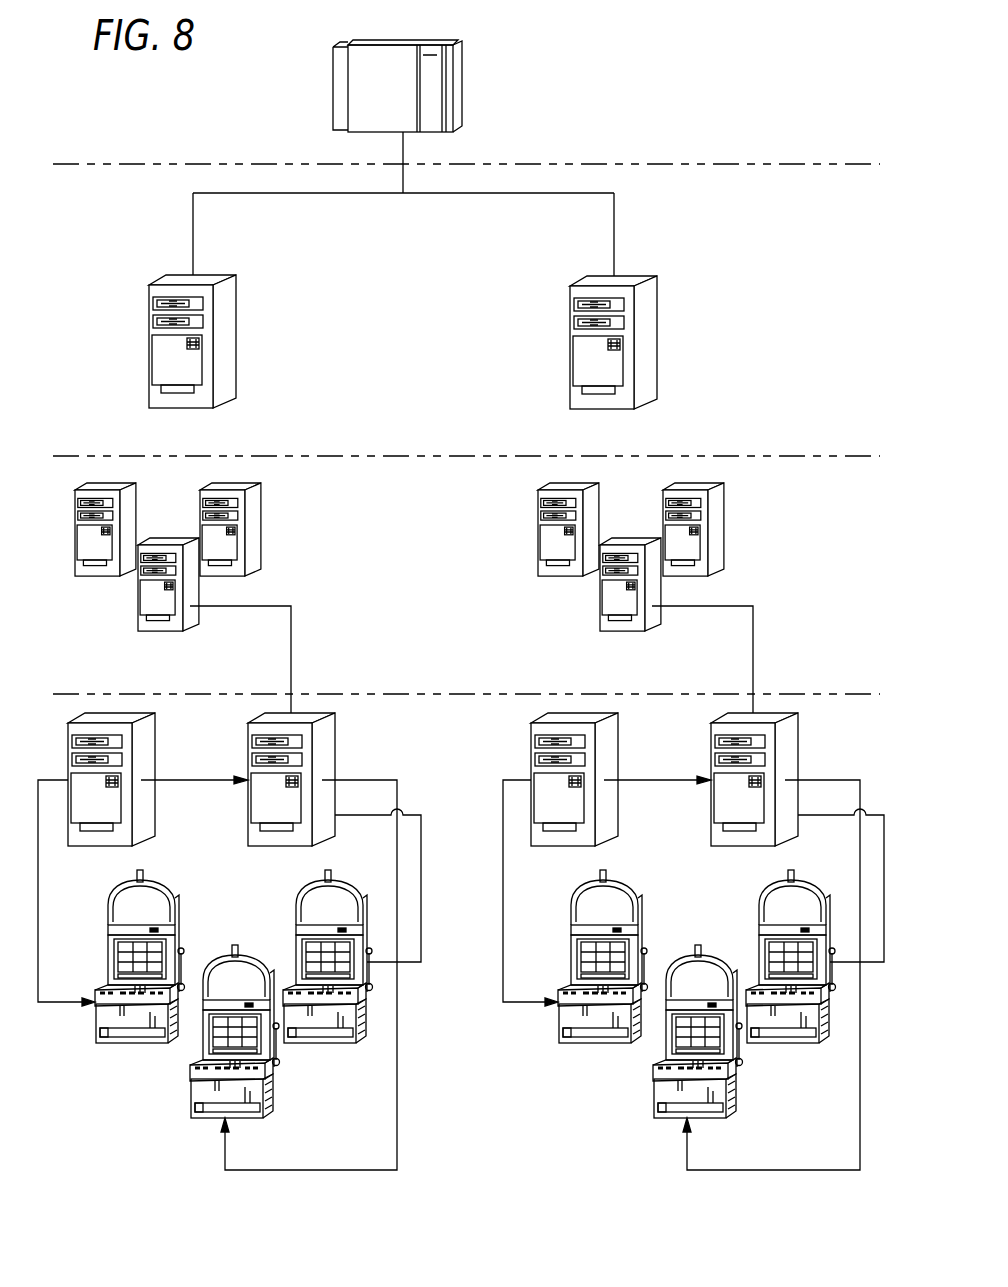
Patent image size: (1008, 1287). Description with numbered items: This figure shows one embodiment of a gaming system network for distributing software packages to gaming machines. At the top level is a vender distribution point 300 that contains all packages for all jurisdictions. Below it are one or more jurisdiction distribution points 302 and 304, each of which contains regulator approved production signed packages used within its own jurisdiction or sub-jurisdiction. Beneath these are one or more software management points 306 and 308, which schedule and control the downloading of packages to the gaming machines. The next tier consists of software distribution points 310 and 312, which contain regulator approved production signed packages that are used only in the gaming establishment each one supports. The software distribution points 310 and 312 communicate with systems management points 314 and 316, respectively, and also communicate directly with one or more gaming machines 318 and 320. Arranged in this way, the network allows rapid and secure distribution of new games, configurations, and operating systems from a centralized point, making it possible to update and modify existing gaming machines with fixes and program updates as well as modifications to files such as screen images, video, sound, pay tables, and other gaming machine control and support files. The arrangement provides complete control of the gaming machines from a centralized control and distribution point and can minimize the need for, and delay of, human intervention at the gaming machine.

The vender distribution point 300 is at (418, 42).
The jurisdiction distribution point 302 is at (149, 347).
The jurisdiction distribution point 304 is at (570, 348).
The software management point 306 is at (283, 520).
The software management point 308 is at (766, 523).
The software distribution point 310 is at (366, 752).
The software distribution point 312 is at (824, 751).
The systems management point 314 is at (184, 780).
The systems management point 316 is at (647, 780).
The gaming machines 318 is at (225, 1152).
The gaming machines 320 is at (687, 1152).